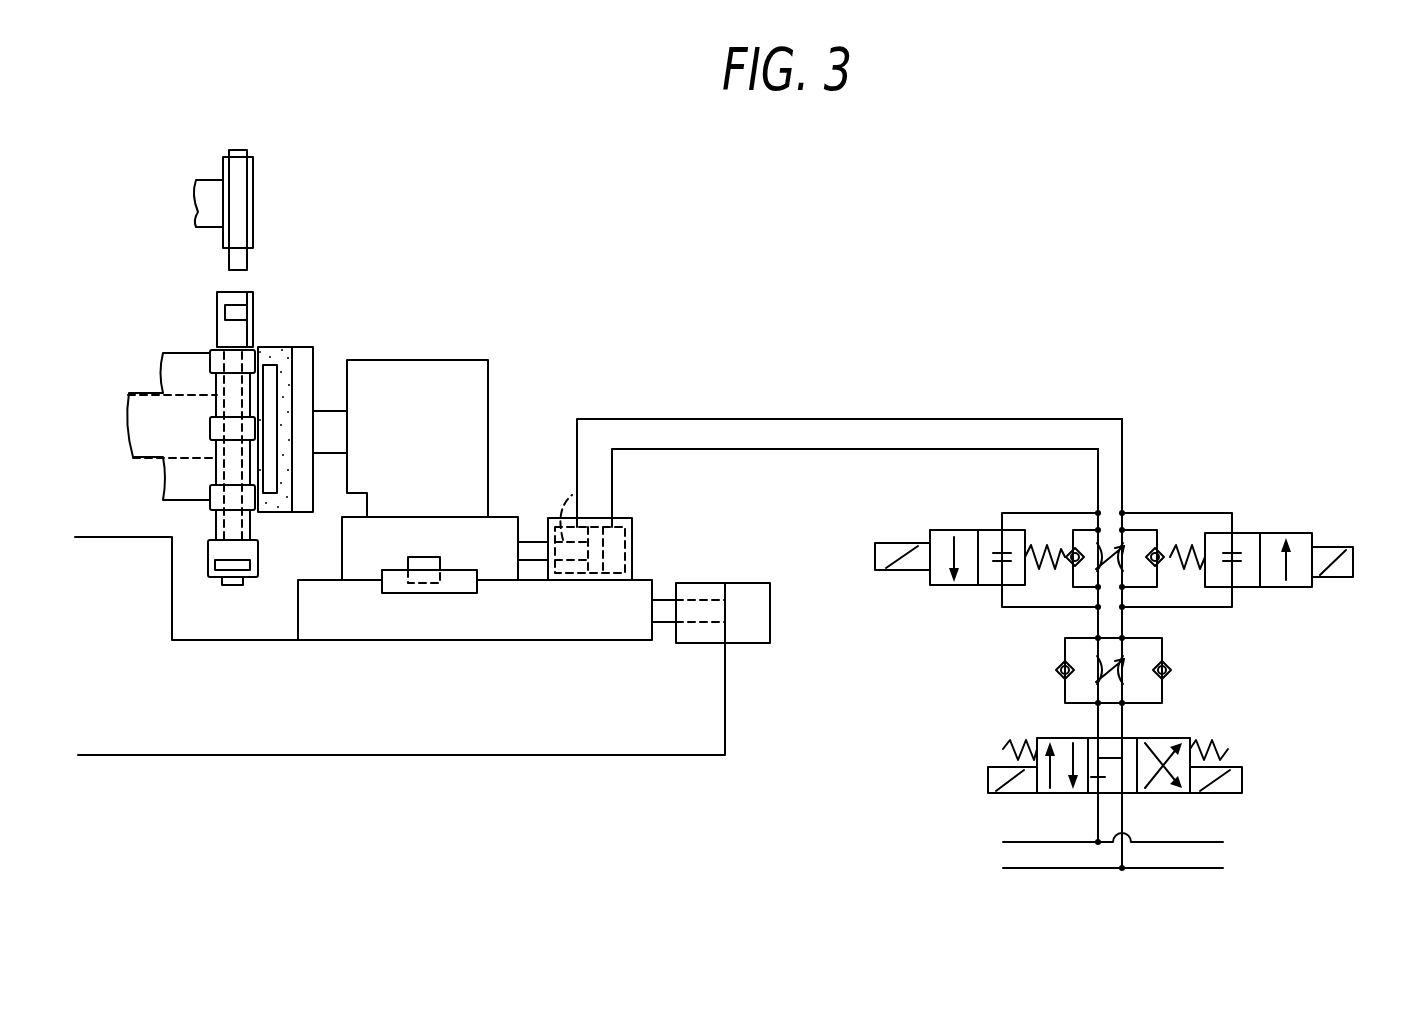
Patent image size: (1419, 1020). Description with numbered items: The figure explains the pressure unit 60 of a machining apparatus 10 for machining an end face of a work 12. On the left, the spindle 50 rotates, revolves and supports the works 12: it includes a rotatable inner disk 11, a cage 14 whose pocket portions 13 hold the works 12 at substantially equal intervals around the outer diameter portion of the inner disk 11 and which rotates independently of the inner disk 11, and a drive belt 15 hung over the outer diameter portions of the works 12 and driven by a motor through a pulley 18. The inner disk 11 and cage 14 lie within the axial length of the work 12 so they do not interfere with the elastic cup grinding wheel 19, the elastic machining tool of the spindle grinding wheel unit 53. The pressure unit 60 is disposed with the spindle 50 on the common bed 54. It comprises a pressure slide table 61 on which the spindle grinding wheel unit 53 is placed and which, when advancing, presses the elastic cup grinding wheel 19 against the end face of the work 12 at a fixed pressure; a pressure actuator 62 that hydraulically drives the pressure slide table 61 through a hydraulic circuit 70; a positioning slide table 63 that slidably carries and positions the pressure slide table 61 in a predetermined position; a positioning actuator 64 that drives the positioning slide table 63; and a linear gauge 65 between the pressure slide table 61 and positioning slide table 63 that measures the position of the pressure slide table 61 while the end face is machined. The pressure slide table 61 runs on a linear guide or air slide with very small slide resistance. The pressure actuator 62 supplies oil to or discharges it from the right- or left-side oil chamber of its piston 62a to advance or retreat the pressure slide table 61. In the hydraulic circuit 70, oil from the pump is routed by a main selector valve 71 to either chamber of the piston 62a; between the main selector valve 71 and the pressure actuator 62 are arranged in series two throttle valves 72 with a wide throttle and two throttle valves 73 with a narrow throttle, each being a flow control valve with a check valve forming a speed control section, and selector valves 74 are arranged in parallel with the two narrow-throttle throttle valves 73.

The machining apparatus 10 is at (395, 243).
The inner disk 11 is at (258, 410).
The work 12 is at (285, 350).
The pocket portion 13 is at (220, 312).
The cage 14 is at (258, 364).
The drive belt 15 is at (245, 262).
The pulley 18 is at (256, 178).
The elastic cup grinding wheel 19 is at (277, 348).
The spindle 50 is at (166, 341).
The spindle grinding wheel unit 53 is at (462, 364).
The common bed 54 is at (690, 720).
The pressure unit 60 is at (510, 500).
The pressure slide table 61 is at (358, 545).
The pressure actuator 62 is at (627, 518).
The piston 62a is at (565, 540).
The positioning slide table 63 is at (627, 602).
The positioning actuator 64 is at (748, 605).
The linear gauge 65 is at (433, 557).
The hydraulic circuit 70 is at (1223, 463).
The main selector valve 71 is at (1188, 738).
The throttle valve with a wide throttle 72 is at (1063, 652).
The throttle valve with a narrow throttle 73 is at (1083, 532).
The selector valve 74 is at (965, 530).